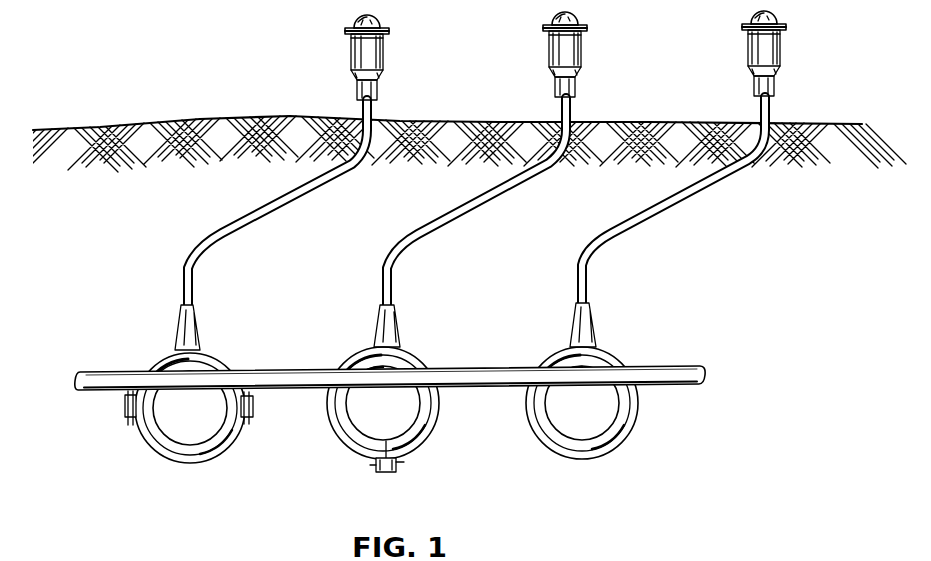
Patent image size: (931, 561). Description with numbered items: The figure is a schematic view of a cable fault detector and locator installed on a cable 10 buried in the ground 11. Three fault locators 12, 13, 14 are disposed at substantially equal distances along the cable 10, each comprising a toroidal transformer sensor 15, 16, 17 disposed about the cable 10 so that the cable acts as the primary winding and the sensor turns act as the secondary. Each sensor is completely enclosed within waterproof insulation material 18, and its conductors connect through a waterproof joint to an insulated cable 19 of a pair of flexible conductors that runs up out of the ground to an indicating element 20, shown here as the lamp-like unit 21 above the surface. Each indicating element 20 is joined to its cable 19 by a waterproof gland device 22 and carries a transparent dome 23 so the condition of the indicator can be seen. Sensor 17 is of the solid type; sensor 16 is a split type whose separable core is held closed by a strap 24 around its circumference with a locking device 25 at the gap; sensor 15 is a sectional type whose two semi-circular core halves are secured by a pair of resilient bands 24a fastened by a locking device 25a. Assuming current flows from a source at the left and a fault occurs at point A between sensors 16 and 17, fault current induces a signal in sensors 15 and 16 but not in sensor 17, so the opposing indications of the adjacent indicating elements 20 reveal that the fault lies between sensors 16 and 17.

The cable 10 is at (95, 379).
The ground 11 is at (146, 142).
The fault locator 12 is at (341, 177).
The fault locator 13 is at (542, 174).
The fault locator 14 is at (735, 172).
The transformer sensor 15 is at (160, 443).
The transformer sensor 16 is at (353, 440).
The transformer sensor 17 is at (558, 437).
The insulation material 18 is at (185, 325).
The insulated cable 19 is at (212, 232).
The indicating element 20 is at (379, 55).
The lamp body 21 is at (352, 58).
The gland device 22 is at (381, 92).
The dome 23 is at (356, 24).
The strap 24 is at (355, 355).
The resilient bands 24a is at (220, 355).
The locking device 25 is at (396, 468).
The locking device 25a is at (125, 406).
The point A is at (479, 369).